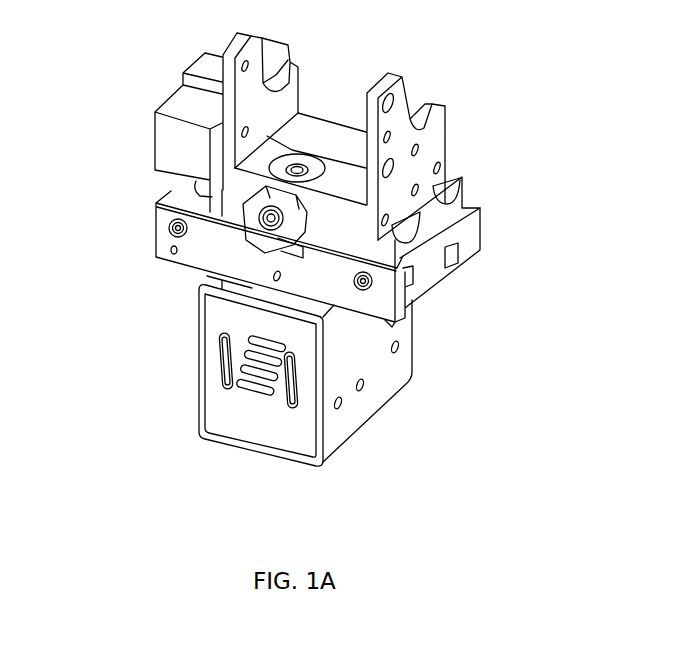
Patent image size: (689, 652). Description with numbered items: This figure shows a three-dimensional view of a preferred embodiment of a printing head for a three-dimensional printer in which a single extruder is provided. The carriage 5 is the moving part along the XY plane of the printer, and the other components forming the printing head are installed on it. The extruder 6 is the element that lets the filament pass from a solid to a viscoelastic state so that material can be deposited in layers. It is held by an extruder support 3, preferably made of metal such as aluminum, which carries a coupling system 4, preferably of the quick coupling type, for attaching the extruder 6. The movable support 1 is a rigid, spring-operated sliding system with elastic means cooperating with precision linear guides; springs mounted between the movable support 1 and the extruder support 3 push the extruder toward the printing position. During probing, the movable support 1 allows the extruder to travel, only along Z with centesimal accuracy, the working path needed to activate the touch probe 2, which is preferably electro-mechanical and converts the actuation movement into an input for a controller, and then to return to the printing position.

The movable support 1 is at (424, 300).
The touch probe 2 is at (150, 140).
The extruder support 3 is at (398, 158).
The coupling system 4 is at (262, 206).
The carriage 5 is at (456, 226).
The extruder 6 is at (311, 440).